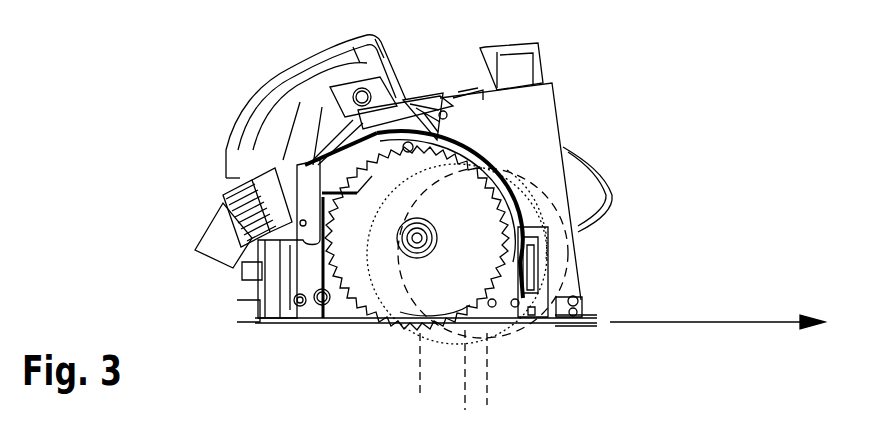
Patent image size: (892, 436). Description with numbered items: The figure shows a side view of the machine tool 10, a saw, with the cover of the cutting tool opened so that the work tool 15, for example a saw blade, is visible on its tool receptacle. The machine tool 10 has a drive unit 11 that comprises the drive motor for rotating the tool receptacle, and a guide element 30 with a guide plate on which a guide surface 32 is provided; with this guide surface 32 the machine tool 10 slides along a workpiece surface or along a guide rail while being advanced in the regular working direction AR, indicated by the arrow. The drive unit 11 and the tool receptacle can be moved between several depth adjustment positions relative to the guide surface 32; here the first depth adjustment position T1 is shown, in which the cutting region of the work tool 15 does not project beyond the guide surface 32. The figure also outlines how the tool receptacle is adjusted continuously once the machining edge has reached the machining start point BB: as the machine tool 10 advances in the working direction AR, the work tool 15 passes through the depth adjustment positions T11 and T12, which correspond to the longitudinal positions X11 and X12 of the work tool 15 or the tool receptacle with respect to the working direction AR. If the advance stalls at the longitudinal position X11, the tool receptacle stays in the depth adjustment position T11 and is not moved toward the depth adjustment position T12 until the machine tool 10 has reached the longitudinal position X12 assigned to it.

The machine tool 10 is at (750, 158).
The drive unit 11 is at (200, 128).
The depth adjustment position T1 is at (600, 158).
The guide element 30 is at (588, 305).
The guide surface 32 is at (285, 322).
The work tool 15 is at (400, 328).
The depth adjustment position T11 is at (362, 338).
The depth adjustment position T12 is at (490, 337).
The machining start point BB is at (416, 387).
The longitudinal position X11 is at (462, 403).
The longitudinal position X12 is at (488, 396).
The regular working direction AR is at (698, 323).